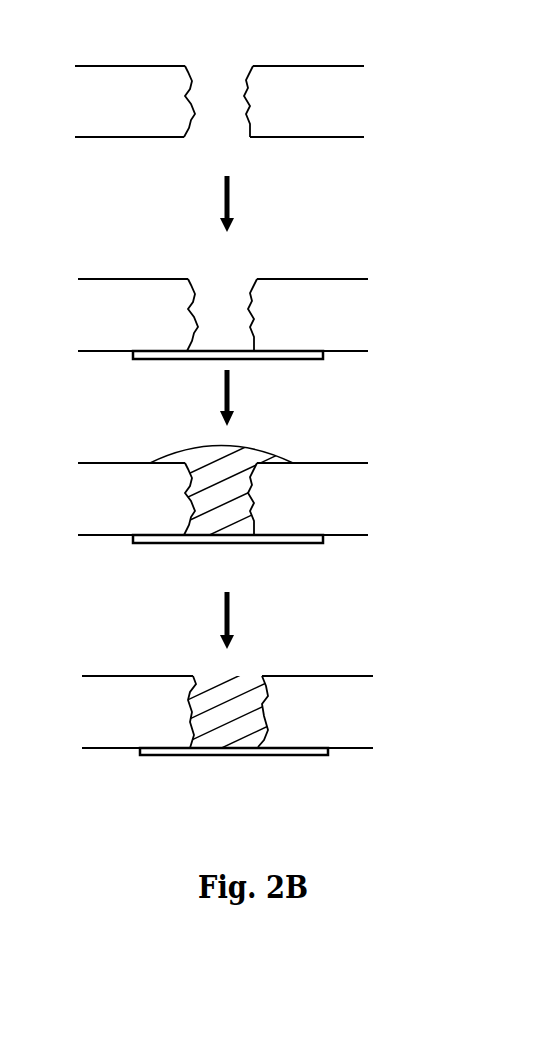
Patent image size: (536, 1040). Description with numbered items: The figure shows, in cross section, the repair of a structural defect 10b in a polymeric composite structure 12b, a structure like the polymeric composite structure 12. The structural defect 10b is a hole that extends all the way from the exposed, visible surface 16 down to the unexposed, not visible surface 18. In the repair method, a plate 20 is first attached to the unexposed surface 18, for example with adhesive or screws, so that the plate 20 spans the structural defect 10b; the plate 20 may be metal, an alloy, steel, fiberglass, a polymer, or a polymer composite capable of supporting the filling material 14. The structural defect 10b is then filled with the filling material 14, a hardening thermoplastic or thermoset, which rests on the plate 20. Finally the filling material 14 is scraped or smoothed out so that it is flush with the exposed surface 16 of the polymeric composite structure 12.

The structural defect 10b is at (198, 62).
The polymeric composite structure 12 is at (322, 125).
The polymeric composite structure 12b is at (107, 127).
The filling material 14 is at (240, 461).
The exposed surface 16 is at (287, 66).
The unexposed surface 18 is at (127, 138).
The plate 20 is at (260, 358).